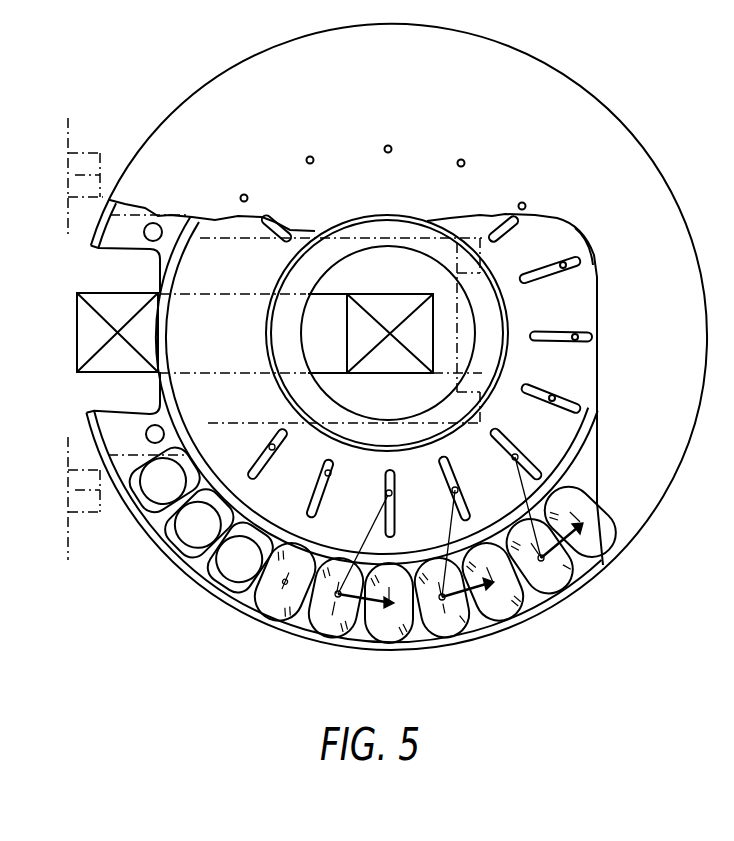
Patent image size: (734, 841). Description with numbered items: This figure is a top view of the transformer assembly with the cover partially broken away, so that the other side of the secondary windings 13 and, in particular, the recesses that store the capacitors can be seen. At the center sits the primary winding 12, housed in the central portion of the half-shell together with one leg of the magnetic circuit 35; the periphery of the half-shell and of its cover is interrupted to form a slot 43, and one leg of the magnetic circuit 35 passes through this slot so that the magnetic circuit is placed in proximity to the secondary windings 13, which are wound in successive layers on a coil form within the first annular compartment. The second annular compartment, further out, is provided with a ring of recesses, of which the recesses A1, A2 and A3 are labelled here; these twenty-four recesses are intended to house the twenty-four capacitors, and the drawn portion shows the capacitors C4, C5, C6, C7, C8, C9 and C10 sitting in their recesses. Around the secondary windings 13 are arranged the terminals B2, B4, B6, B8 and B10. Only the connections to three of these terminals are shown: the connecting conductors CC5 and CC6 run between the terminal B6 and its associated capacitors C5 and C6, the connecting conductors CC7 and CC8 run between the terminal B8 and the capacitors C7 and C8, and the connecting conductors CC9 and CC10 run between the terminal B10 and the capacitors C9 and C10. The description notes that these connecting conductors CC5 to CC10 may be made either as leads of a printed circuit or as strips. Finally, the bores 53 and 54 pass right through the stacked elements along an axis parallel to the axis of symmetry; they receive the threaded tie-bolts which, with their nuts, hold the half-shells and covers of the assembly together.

The primary winding 12 is at (376, 433).
The secondary windings 13 is at (255, 270).
The magnetic circuit 35 is at (68, 326).
The slot 43 is at (117, 252).
The bore 53 is at (160, 222).
The bore 54 is at (147, 432).
The recess A1 is at (143, 503).
The recess A2 is at (177, 542).
The recess A3 is at (217, 577).
The terminal B2 is at (277, 430).
The terminal B4 is at (325, 474).
The terminal B6 is at (385, 493).
The terminal B8 is at (447, 461).
The terminal B10 is at (537, 426).
The capacitor C4 is at (268, 596).
The capacitor C5 is at (303, 633).
The capacitor C6 is at (388, 630).
The capacitor C7 is at (458, 627).
The capacitor C8 is at (520, 618).
The capacitor C9 is at (577, 592).
The capacitor C10 is at (572, 498).
The connecting conductor CC5 is at (375, 503).
The connecting conductor CC6 is at (338, 594).
The connecting conductor CC7 is at (445, 494).
The connecting conductor CC8 is at (483, 597).
The connecting conductor CC9 is at (520, 470).
The connecting conductor CC10 is at (583, 527).